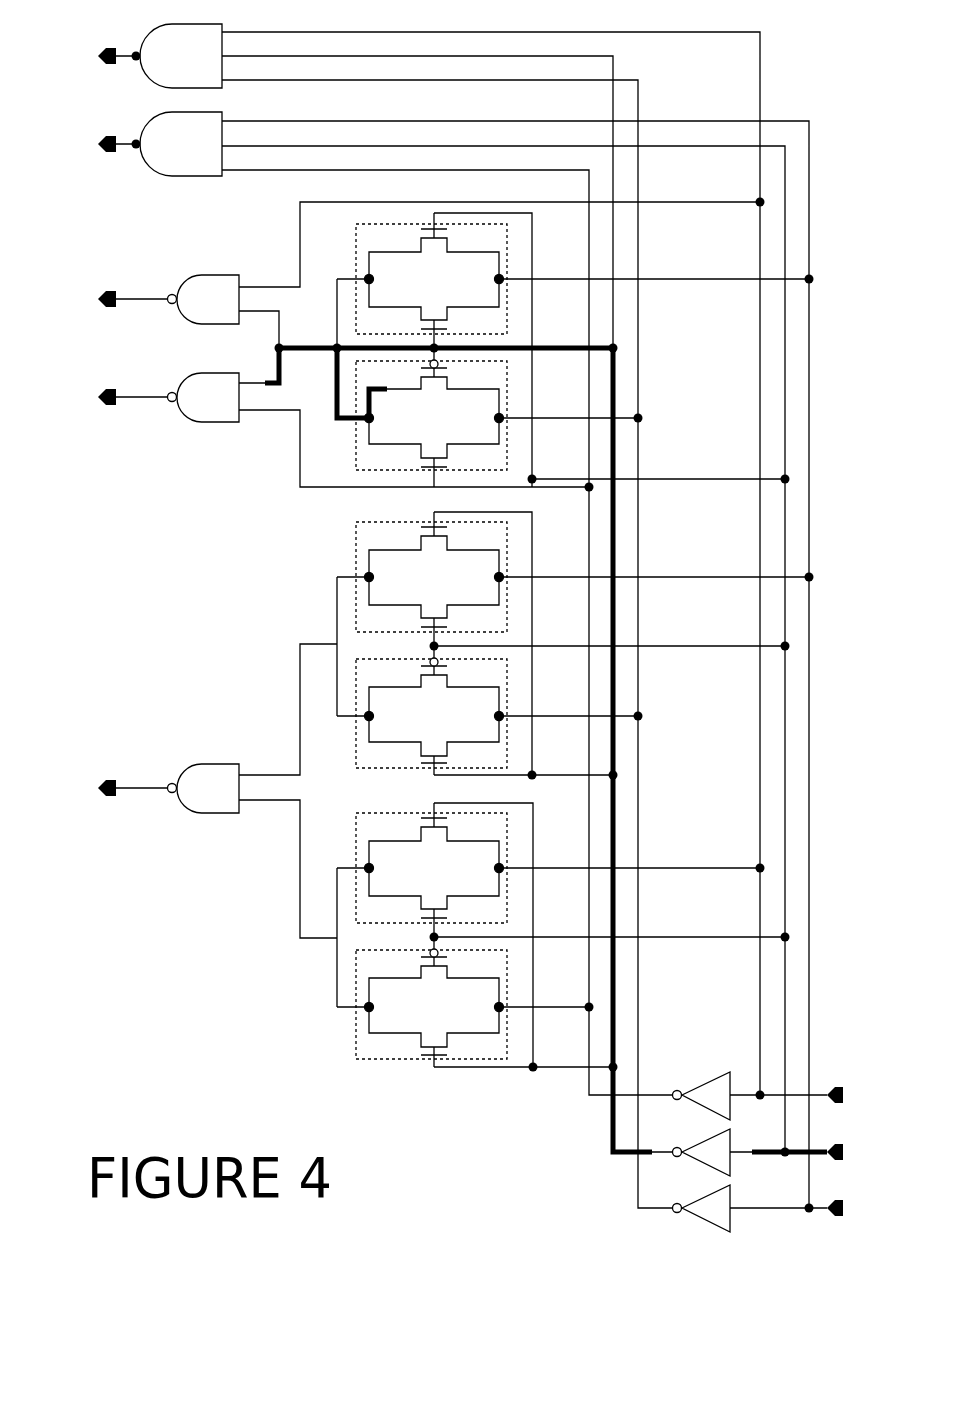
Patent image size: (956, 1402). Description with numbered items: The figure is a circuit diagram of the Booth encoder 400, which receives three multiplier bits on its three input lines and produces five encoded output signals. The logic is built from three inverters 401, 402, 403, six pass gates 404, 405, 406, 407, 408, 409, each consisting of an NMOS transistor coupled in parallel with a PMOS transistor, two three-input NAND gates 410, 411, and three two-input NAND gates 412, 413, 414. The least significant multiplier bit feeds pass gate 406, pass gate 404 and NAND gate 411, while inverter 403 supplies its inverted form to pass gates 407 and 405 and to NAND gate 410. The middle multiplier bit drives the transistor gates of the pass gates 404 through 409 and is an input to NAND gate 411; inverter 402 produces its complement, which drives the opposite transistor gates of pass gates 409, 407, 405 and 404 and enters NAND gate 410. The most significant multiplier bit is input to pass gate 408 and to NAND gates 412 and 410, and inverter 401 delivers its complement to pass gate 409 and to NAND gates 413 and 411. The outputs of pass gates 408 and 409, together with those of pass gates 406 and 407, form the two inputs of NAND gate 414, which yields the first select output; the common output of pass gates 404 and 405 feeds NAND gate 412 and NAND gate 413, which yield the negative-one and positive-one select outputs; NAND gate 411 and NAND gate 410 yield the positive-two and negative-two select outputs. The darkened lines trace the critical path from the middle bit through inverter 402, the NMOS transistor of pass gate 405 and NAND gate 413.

The Booth encoder 400 is at (826, 55).
The inverter 401 is at (707, 1075).
The inverter 402 is at (707, 1133).
The inverter 403 is at (707, 1190).
The pass gate 404 is at (507, 245).
The pass gate 405 is at (507, 375).
The pass gate 406 is at (508, 538).
The pass gate 407 is at (508, 674).
The pass gate 408 is at (508, 823).
The pass gate 409 is at (508, 960).
The three-input NAND gate 410 is at (153, 26).
The three-input NAND gate 411 is at (148, 126).
The two-input NAND gate 412 is at (188, 275).
The two-input NAND gate 413 is at (188, 373).
The two-input NAND gate 414 is at (188, 764).